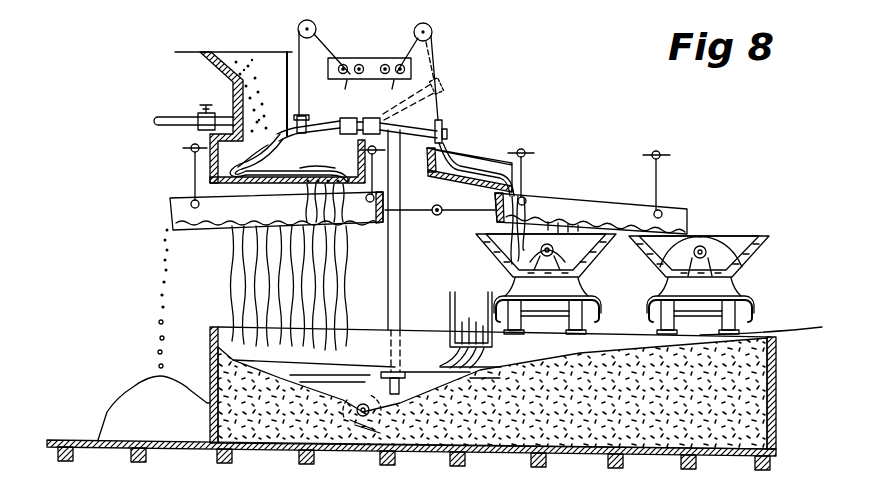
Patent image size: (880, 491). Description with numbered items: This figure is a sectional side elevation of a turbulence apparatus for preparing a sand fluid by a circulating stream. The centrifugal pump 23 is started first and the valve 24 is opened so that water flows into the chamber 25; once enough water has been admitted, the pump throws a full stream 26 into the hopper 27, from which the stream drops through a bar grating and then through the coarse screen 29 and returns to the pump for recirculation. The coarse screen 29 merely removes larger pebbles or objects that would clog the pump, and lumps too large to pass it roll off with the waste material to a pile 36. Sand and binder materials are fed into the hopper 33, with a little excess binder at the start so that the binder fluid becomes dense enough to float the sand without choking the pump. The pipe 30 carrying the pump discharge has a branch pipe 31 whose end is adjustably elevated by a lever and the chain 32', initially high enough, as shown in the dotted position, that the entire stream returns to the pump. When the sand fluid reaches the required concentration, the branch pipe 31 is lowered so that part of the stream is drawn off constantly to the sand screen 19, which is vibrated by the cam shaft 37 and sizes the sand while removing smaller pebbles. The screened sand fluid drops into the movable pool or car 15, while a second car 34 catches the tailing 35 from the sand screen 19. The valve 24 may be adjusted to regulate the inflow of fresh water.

The movable pool or car 15 is at (586, 262).
The sand screen 19 is at (668, 225).
The centrifugal pump 23 is at (346, 451).
The valve 24 is at (218, 108).
The chamber 25 is at (345, 373).
The stream 26 is at (268, 140).
The hopper 27 is at (323, 158).
The coarse screen 29 is at (180, 181).
The pipe 30 is at (412, 188).
The branch pipe 31 is at (405, 133).
The chain 32' is at (431, 81).
The hopper 33 is at (283, 32).
The car 34 is at (752, 243).
The tailing 35 is at (706, 240).
The pile 36 is at (140, 381).
The cam shaft 37 is at (433, 217).